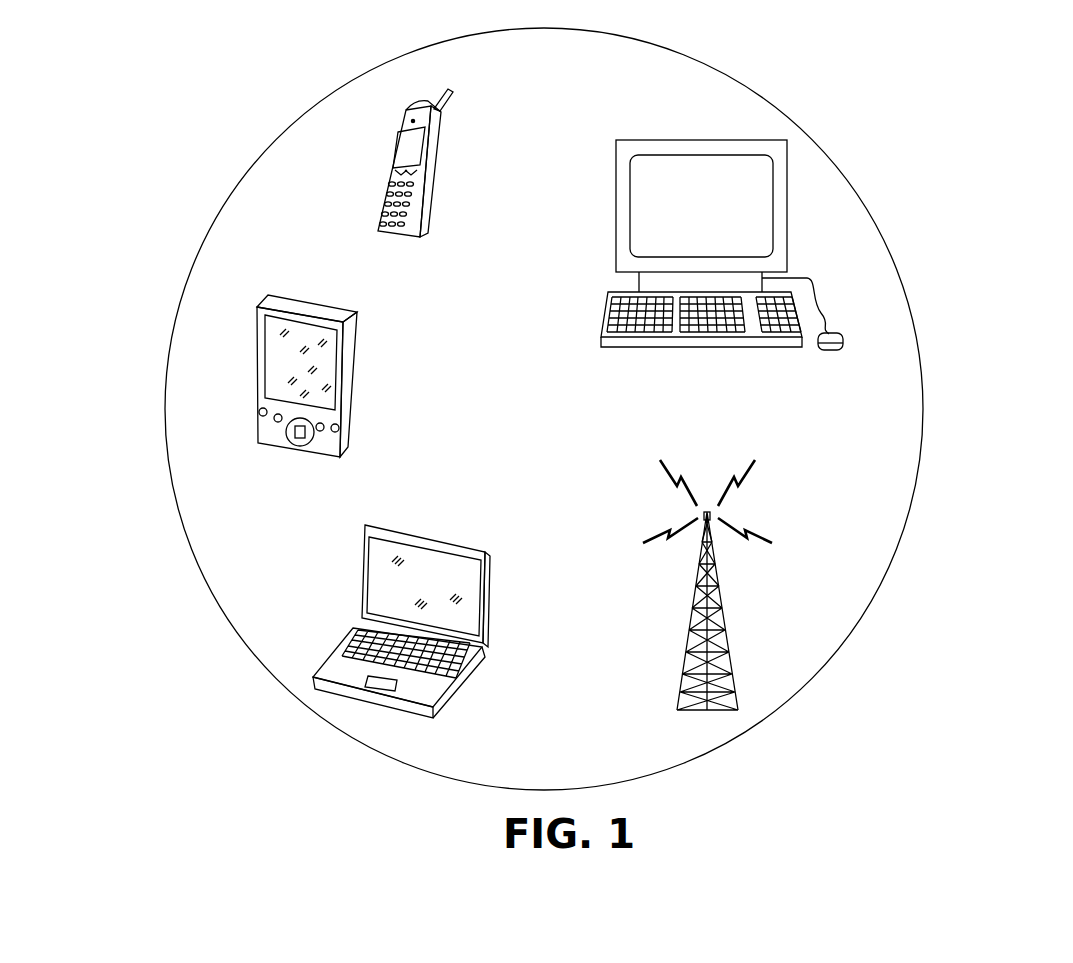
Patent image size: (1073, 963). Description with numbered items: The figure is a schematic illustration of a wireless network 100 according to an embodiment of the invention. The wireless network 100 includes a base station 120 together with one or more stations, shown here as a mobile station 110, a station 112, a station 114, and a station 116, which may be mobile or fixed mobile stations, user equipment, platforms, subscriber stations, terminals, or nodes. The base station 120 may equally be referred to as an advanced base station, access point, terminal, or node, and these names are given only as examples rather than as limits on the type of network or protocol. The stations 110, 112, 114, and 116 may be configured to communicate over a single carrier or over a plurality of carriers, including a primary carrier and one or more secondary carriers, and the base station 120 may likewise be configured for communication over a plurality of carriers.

The wireless network 100 is at (990, 66).
The mobile station 110 is at (433, 533).
The station 112 is at (359, 398).
The station 114 is at (389, 152).
The station 116 is at (677, 140).
The base station 120 is at (731, 641).